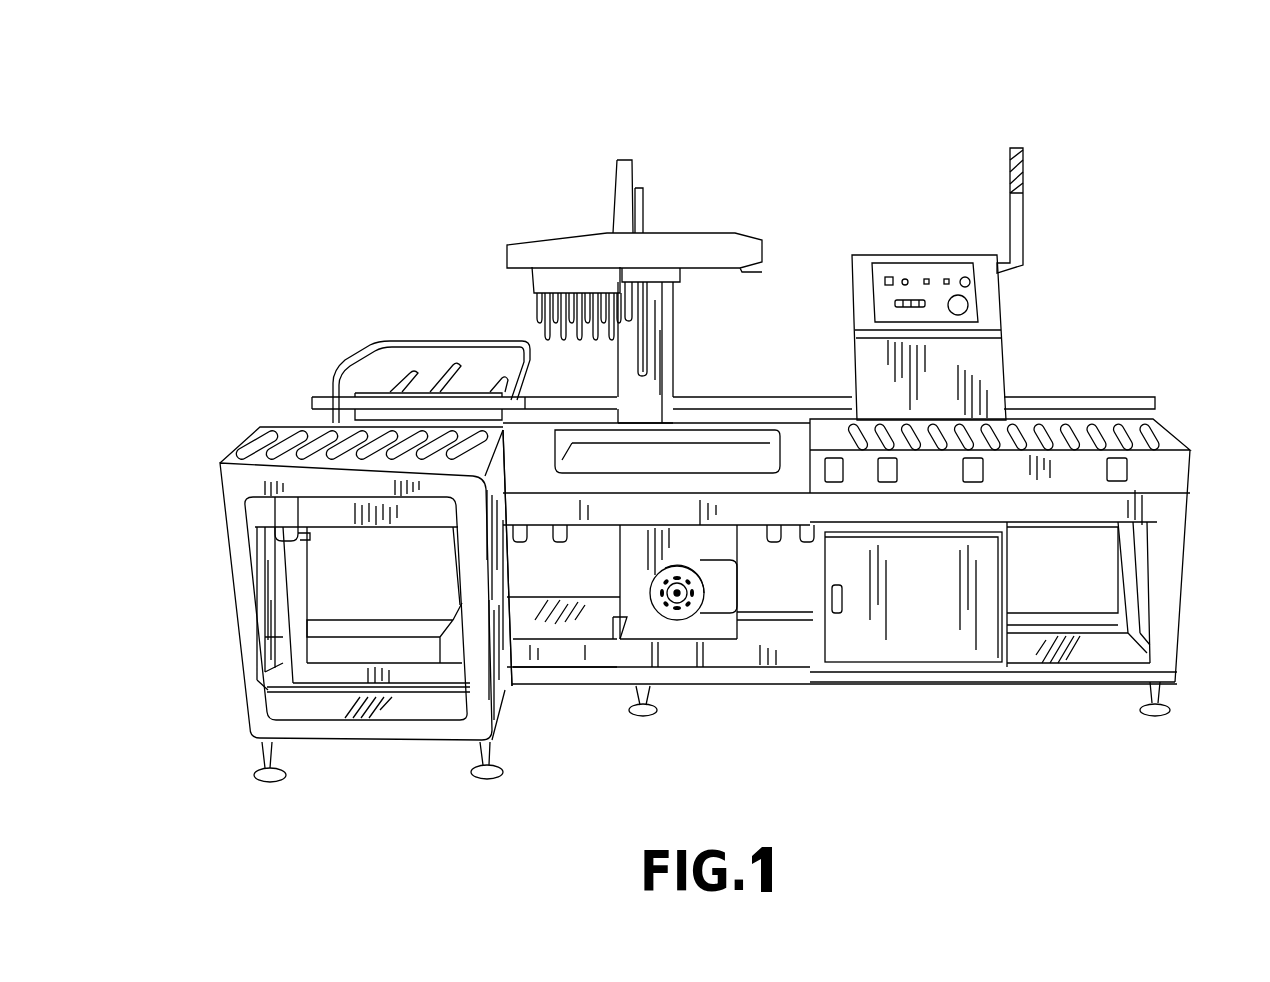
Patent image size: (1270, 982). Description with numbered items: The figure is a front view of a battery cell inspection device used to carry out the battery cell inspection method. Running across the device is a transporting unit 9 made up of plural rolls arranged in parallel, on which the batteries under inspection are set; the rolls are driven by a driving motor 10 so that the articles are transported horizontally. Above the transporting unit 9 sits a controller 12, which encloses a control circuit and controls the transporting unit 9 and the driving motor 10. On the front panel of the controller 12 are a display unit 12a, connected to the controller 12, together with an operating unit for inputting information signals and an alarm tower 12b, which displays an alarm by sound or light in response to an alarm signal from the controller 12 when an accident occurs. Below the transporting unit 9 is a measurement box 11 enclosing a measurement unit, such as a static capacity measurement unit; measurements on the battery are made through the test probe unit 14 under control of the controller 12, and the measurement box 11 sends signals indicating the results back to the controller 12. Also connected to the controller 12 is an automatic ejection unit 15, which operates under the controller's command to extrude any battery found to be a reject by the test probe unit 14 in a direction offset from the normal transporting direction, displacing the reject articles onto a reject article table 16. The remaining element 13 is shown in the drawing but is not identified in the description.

The transporting unit 9 is at (1165, 438).
The driving motor 10 is at (682, 613).
The measurement box 11 is at (940, 633).
The controller 12 is at (988, 353).
The display unit 12a is at (905, 268).
The alarm tower 12b is at (1028, 168).
The head unit 13 is at (676, 240).
The test probe unit 14 is at (520, 287).
The automatic ejection unit 15 is at (427, 370).
The reject article table 16 is at (317, 475).